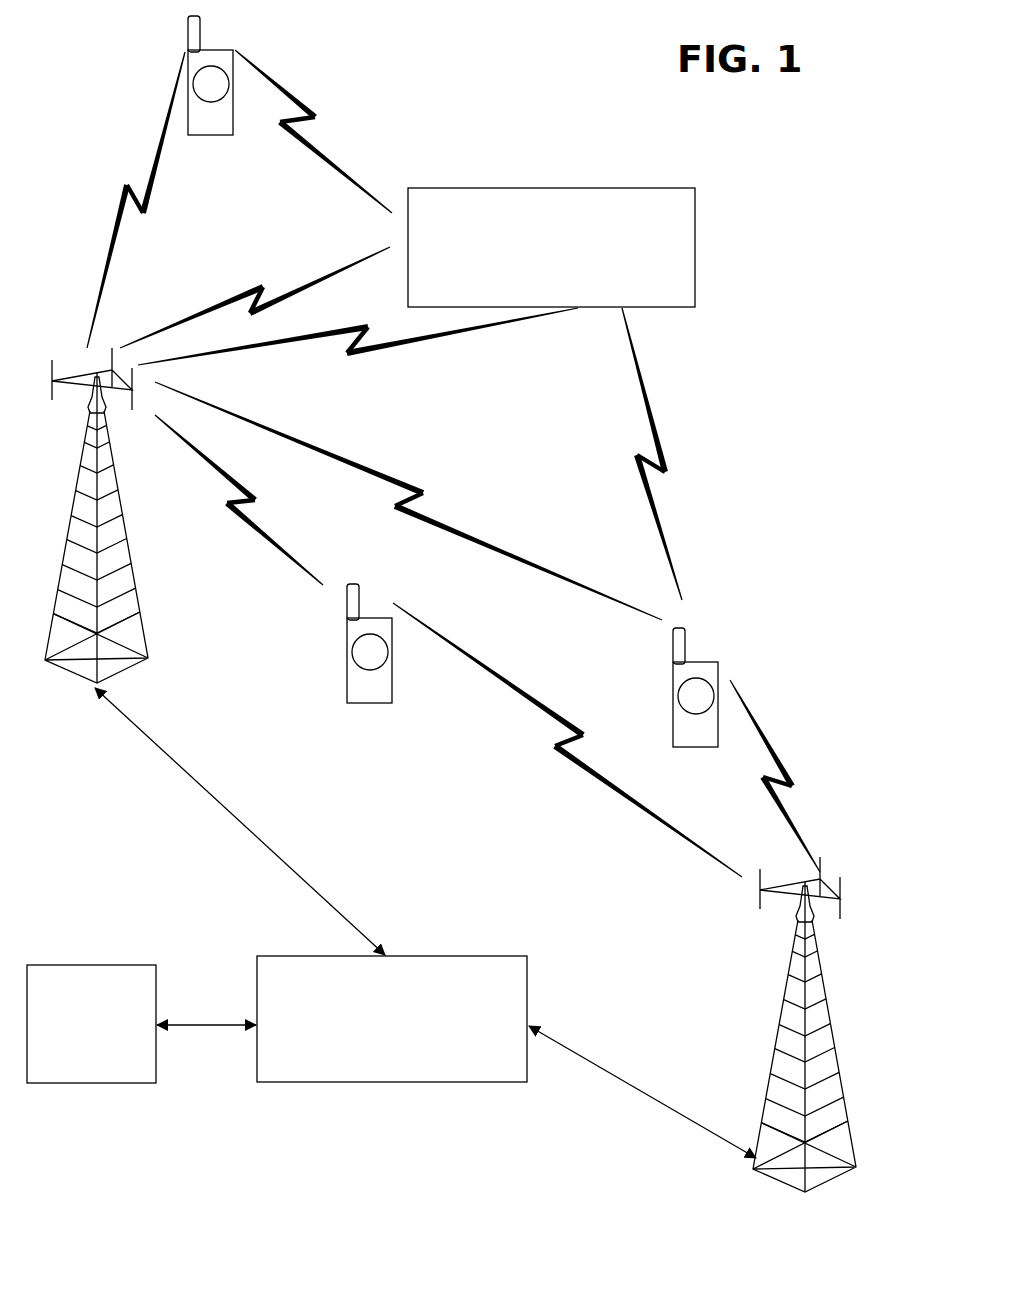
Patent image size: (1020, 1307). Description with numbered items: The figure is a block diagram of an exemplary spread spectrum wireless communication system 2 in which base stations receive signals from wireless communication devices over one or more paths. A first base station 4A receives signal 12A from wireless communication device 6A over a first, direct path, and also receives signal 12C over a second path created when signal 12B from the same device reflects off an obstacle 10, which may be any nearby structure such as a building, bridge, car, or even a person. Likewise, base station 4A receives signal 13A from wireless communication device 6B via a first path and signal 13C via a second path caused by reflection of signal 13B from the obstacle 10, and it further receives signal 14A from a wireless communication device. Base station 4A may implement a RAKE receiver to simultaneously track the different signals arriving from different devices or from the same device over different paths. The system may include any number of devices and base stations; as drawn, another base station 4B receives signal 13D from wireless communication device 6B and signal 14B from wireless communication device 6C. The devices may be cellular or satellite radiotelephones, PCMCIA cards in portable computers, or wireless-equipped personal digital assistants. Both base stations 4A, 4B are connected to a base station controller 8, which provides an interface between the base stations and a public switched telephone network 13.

The spread spectrum wireless communication system 2 is at (401, 90).
The base station 4A is at (143, 644).
The base station 4B is at (843, 1142).
The wireless communication device 6A is at (212, 150).
The wireless communication device 6B is at (723, 655).
The wireless communication device 6C is at (340, 661).
The base station controller 8 is at (392, 1019).
The obstacle 10 is at (551, 247).
The signal 12A is at (127, 191).
The signal 12B is at (309, 112).
The signal 12C is at (258, 290).
The public switched telephone network 13 is at (91, 1024).
The signal 13A is at (426, 493).
The signal 13B is at (667, 470).
The signal 13C is at (366, 352).
The signal 13D is at (795, 779).
The signal 14A is at (229, 500).
The signal 14B is at (556, 741).